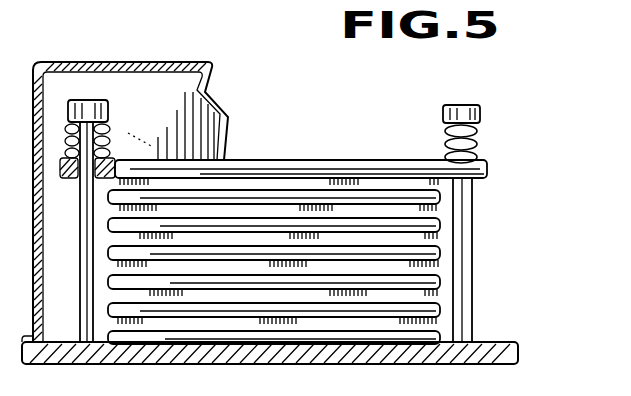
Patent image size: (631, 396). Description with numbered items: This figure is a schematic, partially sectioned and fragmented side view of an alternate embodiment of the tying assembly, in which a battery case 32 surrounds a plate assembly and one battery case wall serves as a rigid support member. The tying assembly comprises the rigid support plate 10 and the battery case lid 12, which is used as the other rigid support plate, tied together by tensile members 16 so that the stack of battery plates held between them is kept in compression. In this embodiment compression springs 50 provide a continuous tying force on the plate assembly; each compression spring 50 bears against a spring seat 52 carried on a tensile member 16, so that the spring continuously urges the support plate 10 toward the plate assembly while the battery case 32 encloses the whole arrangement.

The cover 32 is at (128, 62).
The bolt 52 is at (442, 111).
The spring 50 is at (480, 143).
The plate 10 is at (488, 176).
The plate stack 16 is at (475, 262).
The base plate 12 is at (518, 360).